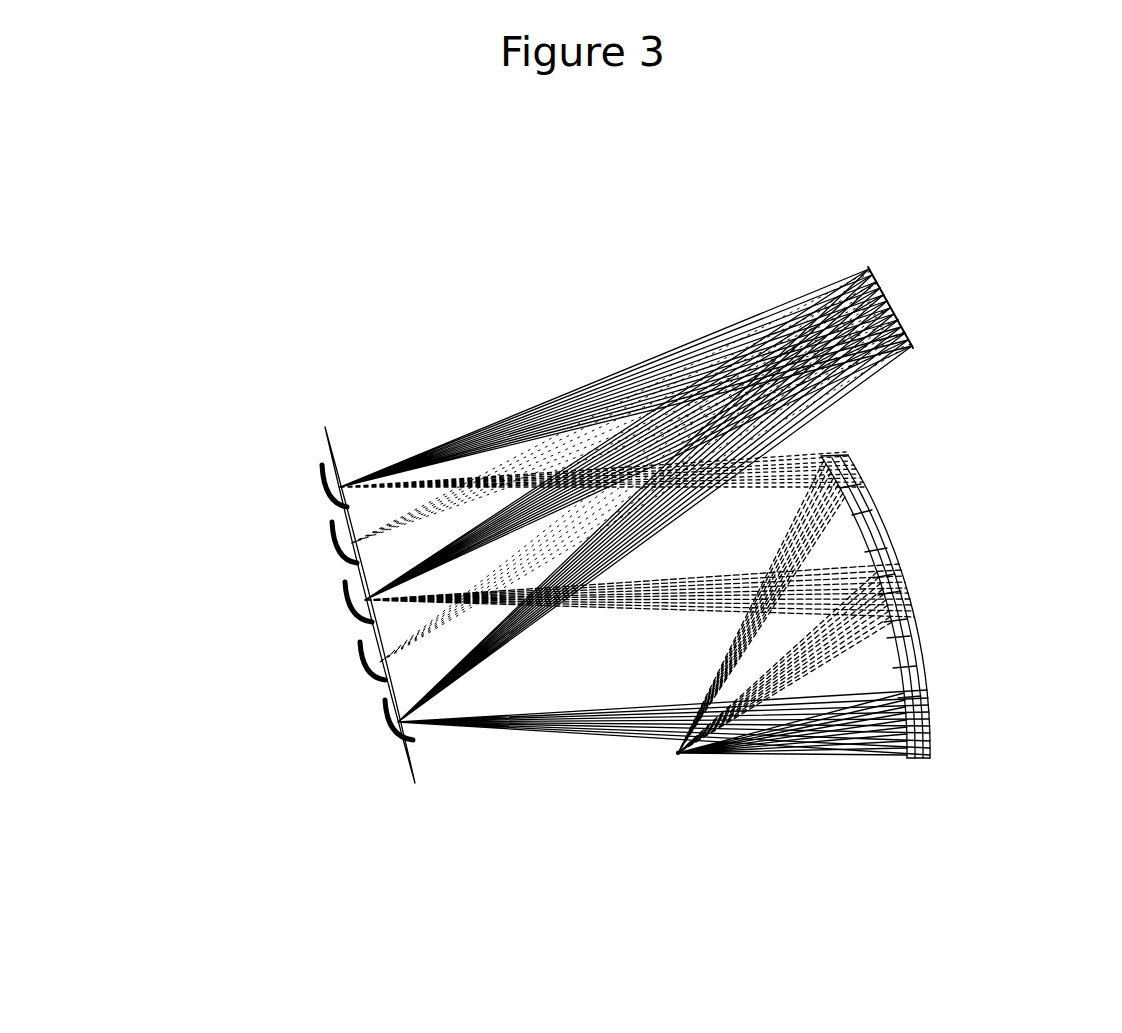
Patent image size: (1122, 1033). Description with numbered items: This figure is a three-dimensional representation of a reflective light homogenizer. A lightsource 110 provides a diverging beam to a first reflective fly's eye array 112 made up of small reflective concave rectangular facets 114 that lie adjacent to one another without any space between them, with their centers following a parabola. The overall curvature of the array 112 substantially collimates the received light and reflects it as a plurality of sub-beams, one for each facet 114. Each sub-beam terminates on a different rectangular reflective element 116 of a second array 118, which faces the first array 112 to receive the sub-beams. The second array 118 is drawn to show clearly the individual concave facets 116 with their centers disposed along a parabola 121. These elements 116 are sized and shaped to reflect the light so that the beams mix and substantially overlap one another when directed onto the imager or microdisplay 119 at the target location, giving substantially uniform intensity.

The lightsource 110 is at (680, 753).
The first reflective fly's eye array 112 is at (942, 551).
The reflective concave facets 114 is at (897, 563).
The rectangular reflective elements 116 is at (330, 483).
The second array 118 is at (264, 610).
The imager or microdisplay 119 is at (880, 268).
The parabola 121 is at (333, 462).